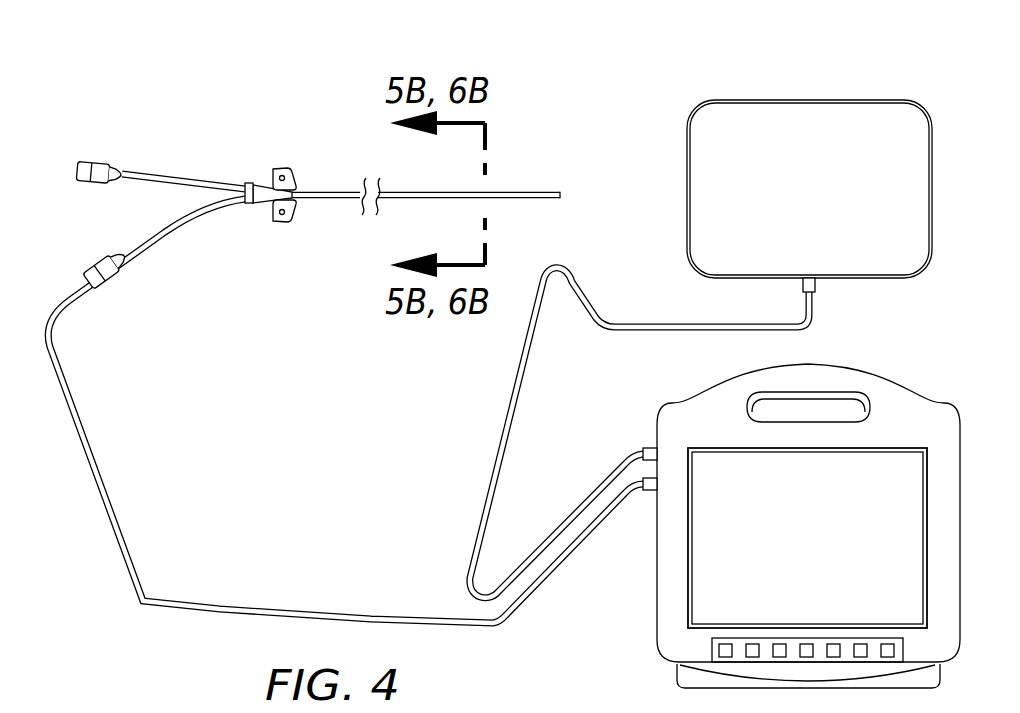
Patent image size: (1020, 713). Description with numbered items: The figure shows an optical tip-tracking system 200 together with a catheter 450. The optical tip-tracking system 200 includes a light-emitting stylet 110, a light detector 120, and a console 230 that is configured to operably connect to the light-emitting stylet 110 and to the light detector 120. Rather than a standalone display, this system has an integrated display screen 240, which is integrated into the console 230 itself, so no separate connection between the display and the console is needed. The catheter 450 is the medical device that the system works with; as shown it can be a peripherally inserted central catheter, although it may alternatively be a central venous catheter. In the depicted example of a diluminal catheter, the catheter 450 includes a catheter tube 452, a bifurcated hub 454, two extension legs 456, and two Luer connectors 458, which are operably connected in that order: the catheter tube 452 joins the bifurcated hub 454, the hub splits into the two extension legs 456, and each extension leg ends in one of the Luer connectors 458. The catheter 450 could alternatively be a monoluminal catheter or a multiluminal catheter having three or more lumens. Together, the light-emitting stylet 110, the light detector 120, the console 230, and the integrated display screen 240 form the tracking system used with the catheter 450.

The second optical tip-tracking system 200 is at (188, 50).
The light-emitting stylet 110 is at (87, 400).
The light detector 120 is at (847, 88).
The console 230 is at (877, 350).
The integrated display screen 240 is at (710, 588).
The catheter 450 is at (296, 157).
The catheter tube 452 is at (339, 200).
The bifurcated hub 454 is at (253, 183).
The extension legs 456 is at (156, 169).
The Luer connectors 458 is at (86, 162).